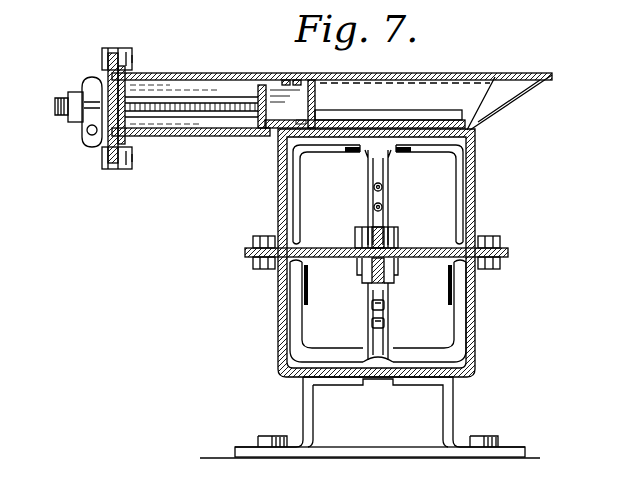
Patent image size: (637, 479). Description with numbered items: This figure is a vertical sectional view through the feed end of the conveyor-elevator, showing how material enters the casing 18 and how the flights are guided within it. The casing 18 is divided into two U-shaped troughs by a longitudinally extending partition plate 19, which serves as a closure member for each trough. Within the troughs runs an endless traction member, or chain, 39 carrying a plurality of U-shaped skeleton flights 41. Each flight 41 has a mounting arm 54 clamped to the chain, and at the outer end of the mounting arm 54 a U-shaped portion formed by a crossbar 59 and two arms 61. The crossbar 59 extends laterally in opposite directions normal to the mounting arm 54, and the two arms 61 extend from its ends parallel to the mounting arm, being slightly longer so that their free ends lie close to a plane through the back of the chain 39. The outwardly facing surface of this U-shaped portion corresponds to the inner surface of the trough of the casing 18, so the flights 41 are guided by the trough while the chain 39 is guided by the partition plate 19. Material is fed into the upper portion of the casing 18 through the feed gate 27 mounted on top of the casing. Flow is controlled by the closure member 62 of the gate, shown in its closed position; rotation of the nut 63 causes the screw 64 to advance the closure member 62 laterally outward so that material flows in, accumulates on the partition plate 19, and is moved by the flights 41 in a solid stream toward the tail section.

The casing 18 is at (477, 186).
The partition plate 19 is at (433, 259).
The feed gate 27 is at (203, 72).
The endless traction member 39 is at (400, 233).
The flights 41 is at (331, 162).
The mounting arm 54 is at (366, 322).
The crossbar 59 is at (414, 162).
The arms 61 is at (452, 180).
The closure member 62 is at (374, 128).
The nut 63 is at (90, 146).
The screw 64 is at (202, 118).